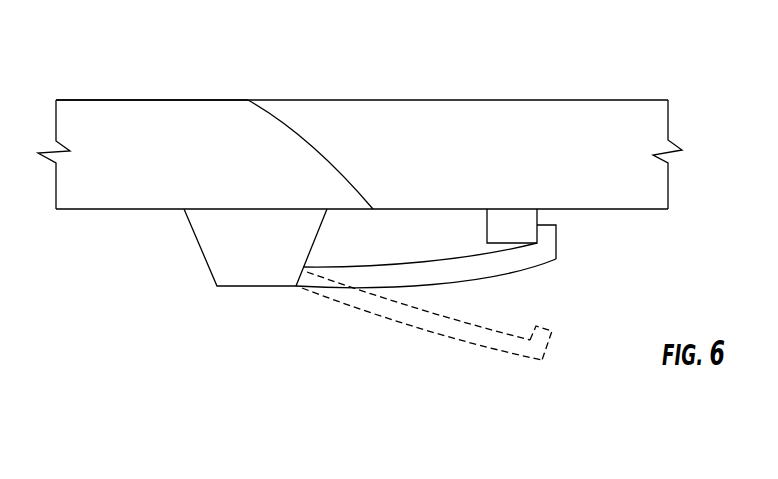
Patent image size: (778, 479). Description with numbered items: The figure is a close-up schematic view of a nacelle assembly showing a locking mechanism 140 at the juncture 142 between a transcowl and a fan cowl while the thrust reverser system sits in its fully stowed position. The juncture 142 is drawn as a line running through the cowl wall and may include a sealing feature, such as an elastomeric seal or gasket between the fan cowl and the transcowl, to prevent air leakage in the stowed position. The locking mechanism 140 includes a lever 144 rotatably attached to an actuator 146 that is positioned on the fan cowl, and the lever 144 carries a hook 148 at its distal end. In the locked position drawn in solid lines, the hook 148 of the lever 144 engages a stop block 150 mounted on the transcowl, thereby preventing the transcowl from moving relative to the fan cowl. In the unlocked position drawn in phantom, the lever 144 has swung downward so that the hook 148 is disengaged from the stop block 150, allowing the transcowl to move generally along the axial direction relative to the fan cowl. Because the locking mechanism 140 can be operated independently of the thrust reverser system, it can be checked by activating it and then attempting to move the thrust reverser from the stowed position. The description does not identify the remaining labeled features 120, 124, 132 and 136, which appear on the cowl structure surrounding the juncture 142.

The first panel 120 is at (108, 128).
The second panel 124 is at (596, 137).
The first panel portion 132 is at (197, 70).
The panel joint region 136 is at (360, 110).
The juncture 142 is at (318, 138).
The locking mechanism 140 is at (381, 283).
The lever 144 is at (465, 273).
The actuator 146 is at (228, 253).
The hook 148 is at (560, 238).
The stop block 150 is at (505, 225).